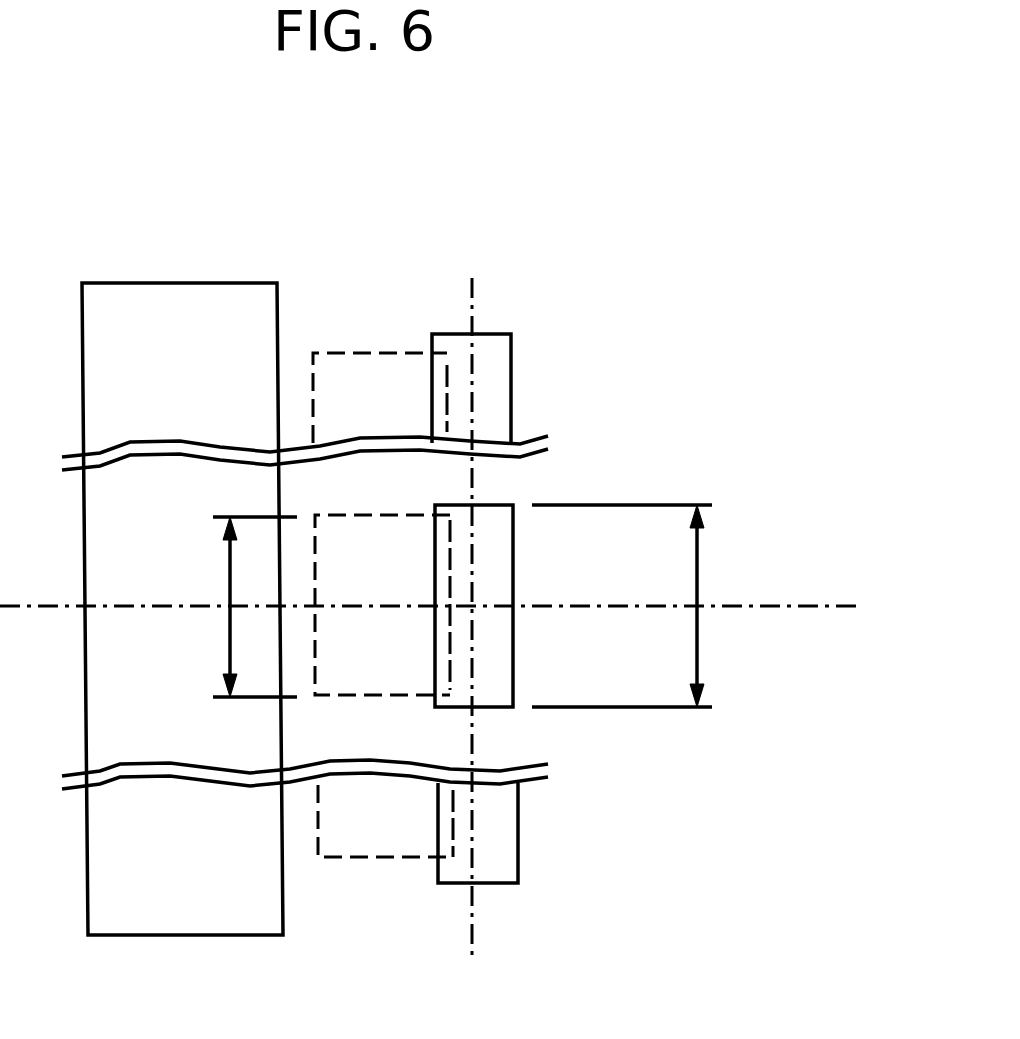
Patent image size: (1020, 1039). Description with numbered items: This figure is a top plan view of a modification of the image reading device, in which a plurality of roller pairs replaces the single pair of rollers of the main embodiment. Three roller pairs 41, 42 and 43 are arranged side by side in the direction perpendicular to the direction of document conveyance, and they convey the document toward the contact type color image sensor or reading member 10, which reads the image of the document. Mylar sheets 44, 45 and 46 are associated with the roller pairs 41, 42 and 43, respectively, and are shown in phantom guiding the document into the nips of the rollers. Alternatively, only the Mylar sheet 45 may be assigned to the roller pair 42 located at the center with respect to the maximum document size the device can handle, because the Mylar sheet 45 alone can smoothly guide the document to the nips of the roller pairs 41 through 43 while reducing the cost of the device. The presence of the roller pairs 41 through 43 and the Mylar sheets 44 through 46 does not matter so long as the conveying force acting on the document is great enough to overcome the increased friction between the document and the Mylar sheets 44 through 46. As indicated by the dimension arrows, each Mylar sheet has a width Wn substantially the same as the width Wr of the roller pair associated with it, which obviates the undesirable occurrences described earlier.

The color image sensor 10 is at (133, 292).
The roller pair 41 is at (511, 388).
The roller pair 42 is at (513, 555).
The roller pair 43 is at (505, 818).
The Mylar sheet 44 is at (370, 366).
The Mylar sheet 45 is at (330, 520).
The Mylar sheet 46 is at (377, 840).
The width of Mylar sheet Wn is at (230, 578).
The width of roller pair Wr is at (697, 560).